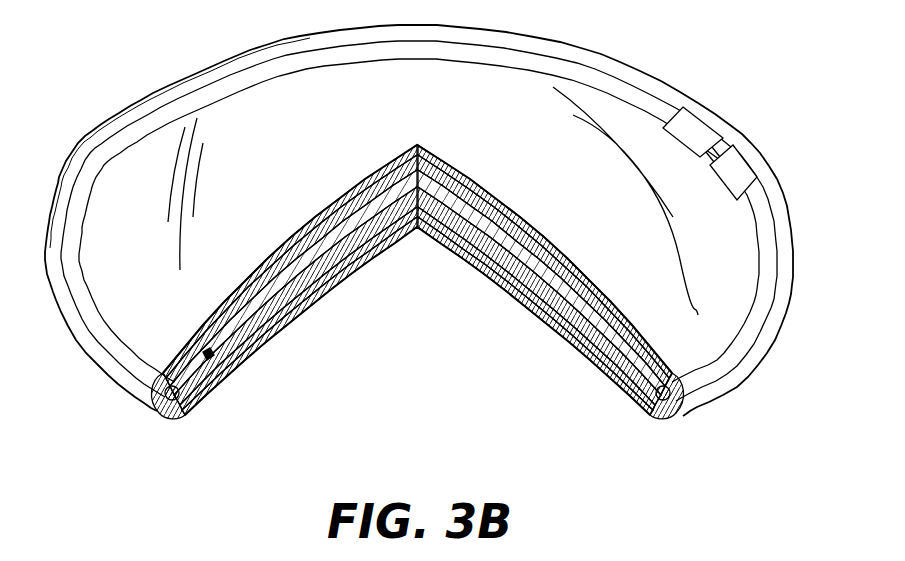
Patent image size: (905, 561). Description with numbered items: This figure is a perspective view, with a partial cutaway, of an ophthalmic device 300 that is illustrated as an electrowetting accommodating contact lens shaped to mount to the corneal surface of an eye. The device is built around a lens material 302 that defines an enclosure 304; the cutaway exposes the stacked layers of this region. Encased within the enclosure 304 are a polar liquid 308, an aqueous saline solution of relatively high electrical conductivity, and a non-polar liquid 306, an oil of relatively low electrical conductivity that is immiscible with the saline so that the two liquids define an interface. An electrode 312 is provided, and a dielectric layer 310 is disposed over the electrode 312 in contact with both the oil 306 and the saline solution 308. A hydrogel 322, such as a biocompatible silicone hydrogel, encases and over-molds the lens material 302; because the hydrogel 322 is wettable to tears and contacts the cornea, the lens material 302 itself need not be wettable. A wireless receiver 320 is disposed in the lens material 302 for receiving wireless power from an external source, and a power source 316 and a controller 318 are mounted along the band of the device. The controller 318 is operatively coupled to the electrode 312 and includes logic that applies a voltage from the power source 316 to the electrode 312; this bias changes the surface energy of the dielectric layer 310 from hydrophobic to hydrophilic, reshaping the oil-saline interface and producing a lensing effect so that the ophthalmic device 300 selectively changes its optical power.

The ophthalmic device 300 is at (118, 66).
The lens material 302 is at (585, 347).
The enclosure 304 is at (507, 240).
The non-polar liquid 306 is at (320, 248).
The polar liquid 308 is at (305, 277).
The dielectric layer 310 is at (210, 356).
The electrode 312 is at (218, 374).
The power source 316 is at (697, 120).
The controller 318 is at (743, 168).
The wireless receiver 320 is at (657, 404).
The hydrogel 322 is at (528, 298).